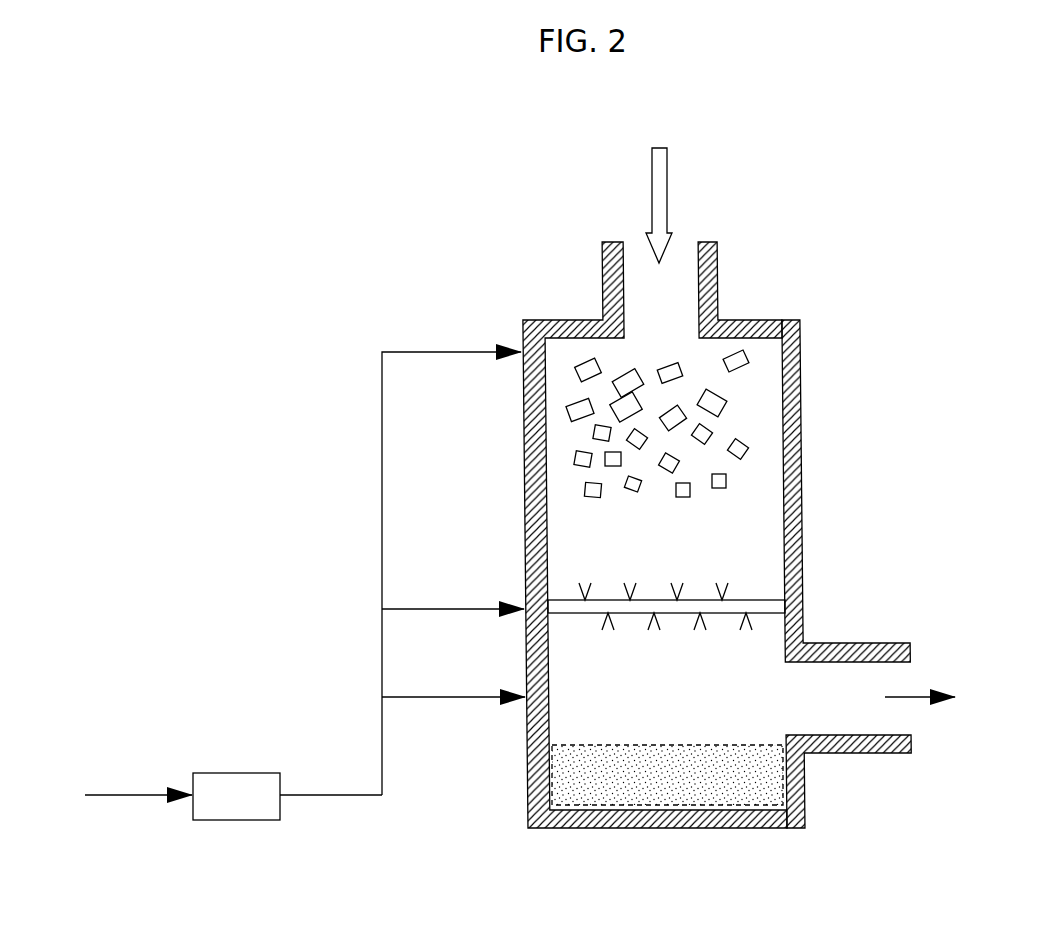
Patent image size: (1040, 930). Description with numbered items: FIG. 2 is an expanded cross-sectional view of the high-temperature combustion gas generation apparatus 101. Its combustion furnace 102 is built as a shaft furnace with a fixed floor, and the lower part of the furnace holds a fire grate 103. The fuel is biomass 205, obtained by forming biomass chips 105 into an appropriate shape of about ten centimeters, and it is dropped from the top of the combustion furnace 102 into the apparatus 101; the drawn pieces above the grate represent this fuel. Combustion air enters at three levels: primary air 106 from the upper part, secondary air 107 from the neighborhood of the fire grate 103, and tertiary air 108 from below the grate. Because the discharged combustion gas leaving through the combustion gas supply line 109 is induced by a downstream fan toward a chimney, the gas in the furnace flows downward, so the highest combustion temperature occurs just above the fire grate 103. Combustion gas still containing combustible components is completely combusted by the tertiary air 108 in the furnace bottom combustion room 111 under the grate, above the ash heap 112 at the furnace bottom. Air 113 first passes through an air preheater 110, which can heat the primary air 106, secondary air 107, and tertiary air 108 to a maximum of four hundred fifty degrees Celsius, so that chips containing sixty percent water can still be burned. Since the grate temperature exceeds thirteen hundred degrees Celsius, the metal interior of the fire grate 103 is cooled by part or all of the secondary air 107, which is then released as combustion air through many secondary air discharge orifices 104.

The high-temperature combustion gas generation apparatus 101 is at (677, 848).
The combustion furnace 102 is at (802, 375).
The fire grate 103 is at (745, 600).
The secondary air discharge orifice 104 is at (722, 583).
The biomass chip 105 is at (667, 160).
The primary air 106 is at (407, 352).
The secondary air 107 is at (412, 609).
The tertiary air 108 is at (422, 697).
The combustion gas supply line 109 is at (917, 697).
The air preheater 110 is at (250, 773).
The furnace bottom combustion room 111 is at (668, 690).
The ash heap 112 is at (692, 775).
The air 113 is at (108, 793).
The coarsely-ground powder biomass 205 is at (722, 405).